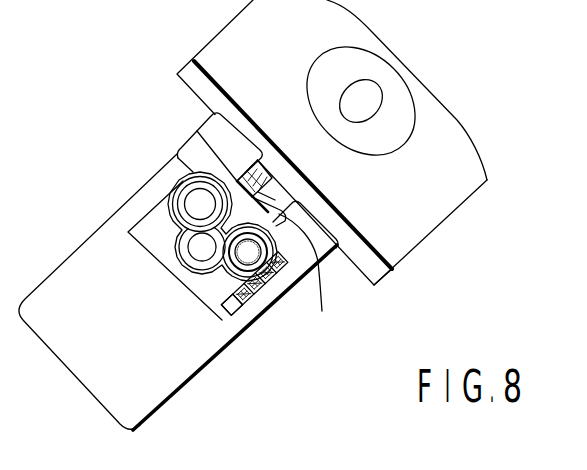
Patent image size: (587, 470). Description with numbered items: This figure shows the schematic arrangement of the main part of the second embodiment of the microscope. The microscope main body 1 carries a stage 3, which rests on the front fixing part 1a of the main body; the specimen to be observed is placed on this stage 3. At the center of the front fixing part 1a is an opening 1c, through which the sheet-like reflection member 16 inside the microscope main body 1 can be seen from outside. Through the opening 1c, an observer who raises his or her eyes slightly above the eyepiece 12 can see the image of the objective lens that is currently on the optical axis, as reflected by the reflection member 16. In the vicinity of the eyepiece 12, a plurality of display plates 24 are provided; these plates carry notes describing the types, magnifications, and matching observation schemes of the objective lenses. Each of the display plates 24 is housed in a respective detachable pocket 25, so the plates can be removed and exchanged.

The microscope main body 1 is at (167, 357).
The front fixing part 1a is at (308, 277).
The opening 1c is at (200, 134).
The stage 3 is at (227, 50).
The eyepiece 12 is at (233, 263).
The sheet-like reflection member 16 is at (323, 256).
The display plates 24 is at (278, 263).
The detachable pockets 25 is at (226, 322).